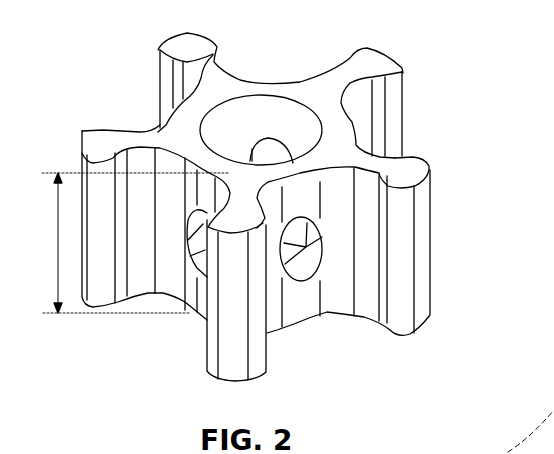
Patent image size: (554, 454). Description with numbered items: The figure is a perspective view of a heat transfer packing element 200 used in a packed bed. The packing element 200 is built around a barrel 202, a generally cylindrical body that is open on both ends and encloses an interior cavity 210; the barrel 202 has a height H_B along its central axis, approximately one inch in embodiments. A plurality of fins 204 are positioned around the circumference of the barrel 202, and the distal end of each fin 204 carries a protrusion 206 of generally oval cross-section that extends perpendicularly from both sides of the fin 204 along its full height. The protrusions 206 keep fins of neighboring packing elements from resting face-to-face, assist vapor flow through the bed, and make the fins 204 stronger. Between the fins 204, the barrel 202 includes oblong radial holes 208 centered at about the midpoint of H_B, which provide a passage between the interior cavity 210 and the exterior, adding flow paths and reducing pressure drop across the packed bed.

The packing element 200 is at (126, 41).
The barrel 202 is at (190, 117).
The fins 204 is at (385, 165).
The protrusion 206 is at (388, 69).
The radial holes 208 is at (305, 262).
The interior cavity 210 is at (254, 120).